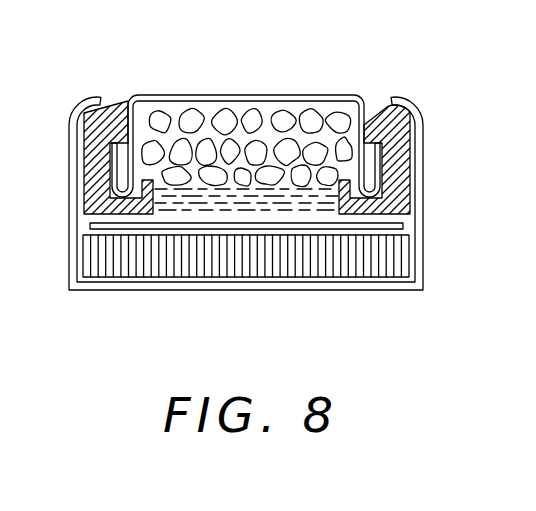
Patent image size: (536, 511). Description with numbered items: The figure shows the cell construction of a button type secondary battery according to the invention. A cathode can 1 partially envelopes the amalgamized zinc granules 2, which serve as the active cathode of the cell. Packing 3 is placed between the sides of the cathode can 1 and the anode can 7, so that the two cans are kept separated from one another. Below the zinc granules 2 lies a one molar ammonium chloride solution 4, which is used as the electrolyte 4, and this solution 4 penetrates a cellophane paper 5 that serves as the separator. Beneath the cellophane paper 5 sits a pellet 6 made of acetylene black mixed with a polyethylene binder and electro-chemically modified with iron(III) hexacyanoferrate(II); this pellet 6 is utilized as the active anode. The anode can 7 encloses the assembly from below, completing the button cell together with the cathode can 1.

The cathode can 1 is at (310, 96).
The amalgamized zinc granules 2 is at (226, 118).
The packing 3 is at (400, 132).
The NH4Cl solution 4 is at (188, 207).
The cellophane paper 5 is at (240, 229).
The pellet 6 is at (312, 262).
The anode can 7 is at (397, 288).